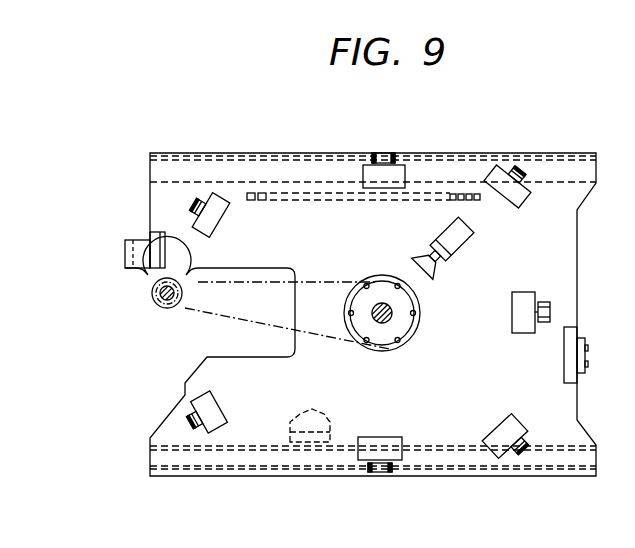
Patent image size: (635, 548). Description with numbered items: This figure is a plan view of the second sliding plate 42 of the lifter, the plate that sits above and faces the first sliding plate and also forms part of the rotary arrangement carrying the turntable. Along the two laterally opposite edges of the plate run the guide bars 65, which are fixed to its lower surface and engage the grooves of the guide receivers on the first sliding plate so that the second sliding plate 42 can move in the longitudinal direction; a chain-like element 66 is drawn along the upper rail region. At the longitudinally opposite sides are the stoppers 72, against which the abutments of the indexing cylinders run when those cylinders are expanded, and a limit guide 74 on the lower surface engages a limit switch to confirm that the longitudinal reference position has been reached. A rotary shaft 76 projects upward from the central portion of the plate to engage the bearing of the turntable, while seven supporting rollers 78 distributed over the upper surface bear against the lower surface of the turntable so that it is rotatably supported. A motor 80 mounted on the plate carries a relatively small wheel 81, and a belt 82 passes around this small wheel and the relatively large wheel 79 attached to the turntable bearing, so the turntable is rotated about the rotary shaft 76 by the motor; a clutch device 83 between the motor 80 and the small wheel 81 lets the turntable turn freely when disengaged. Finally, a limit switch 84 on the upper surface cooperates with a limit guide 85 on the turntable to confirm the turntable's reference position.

The second sliding plate 42 is at (146, 199).
The guide bars 65 is at (222, 156).
The conveyor chain 66 is at (306, 203).
The stoppers 72 is at (125, 265).
The limit guide 74 is at (331, 413).
The rotary shaft 76 is at (392, 316).
The supporting rollers 78 is at (186, 200).
The relatively large wheel 79 is at (350, 337).
The motor 80 is at (150, 312).
The relatively small wheel 81 is at (185, 316).
The belt 82 is at (338, 282).
The clutch device 83 is at (152, 290).
The limit switch 84 is at (473, 233).
The limit guide 85 is at (432, 281).